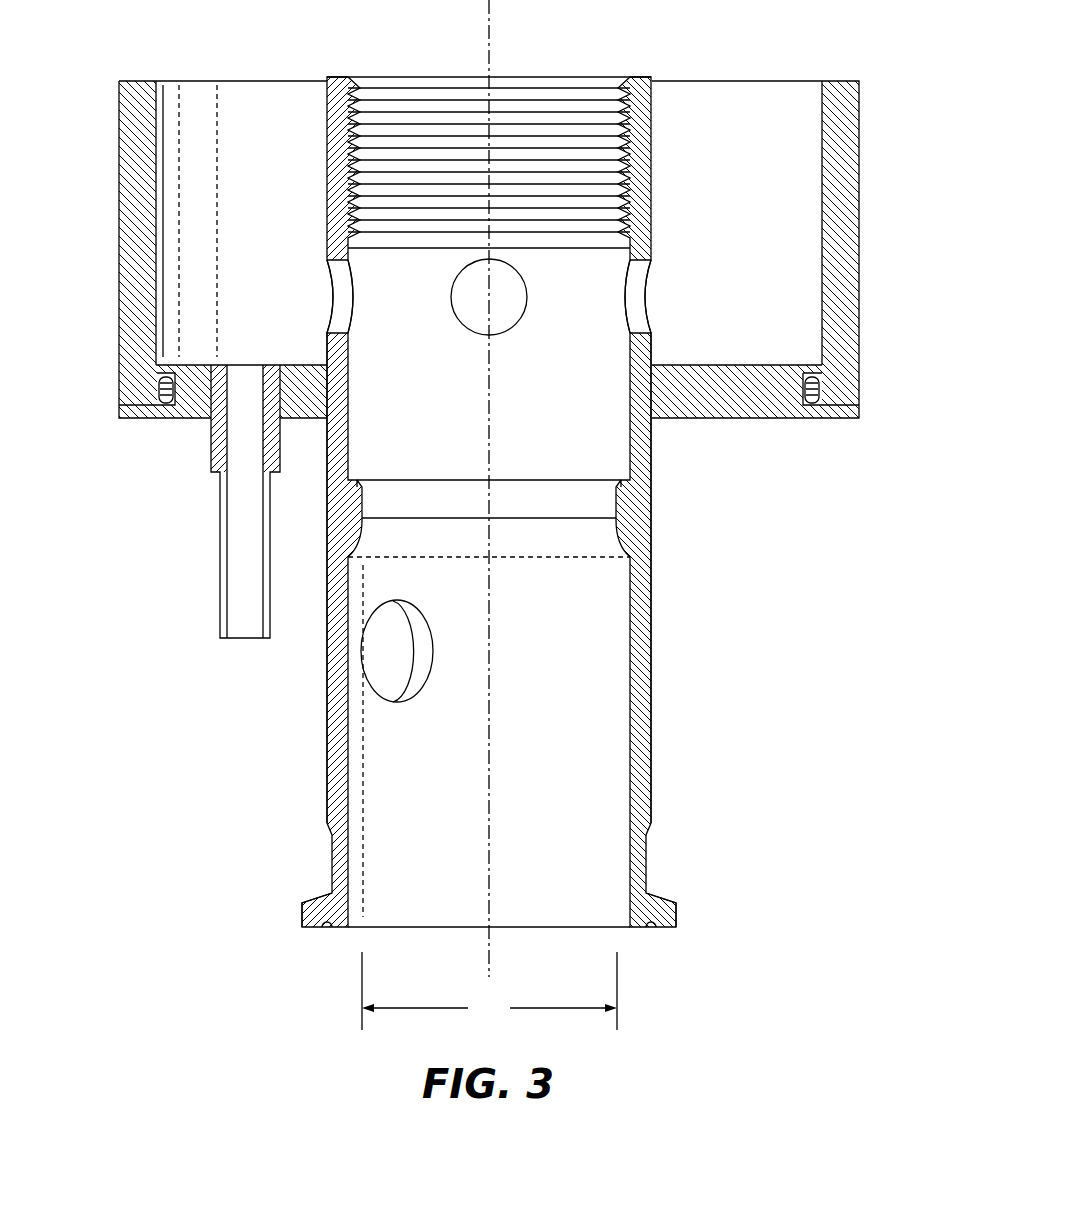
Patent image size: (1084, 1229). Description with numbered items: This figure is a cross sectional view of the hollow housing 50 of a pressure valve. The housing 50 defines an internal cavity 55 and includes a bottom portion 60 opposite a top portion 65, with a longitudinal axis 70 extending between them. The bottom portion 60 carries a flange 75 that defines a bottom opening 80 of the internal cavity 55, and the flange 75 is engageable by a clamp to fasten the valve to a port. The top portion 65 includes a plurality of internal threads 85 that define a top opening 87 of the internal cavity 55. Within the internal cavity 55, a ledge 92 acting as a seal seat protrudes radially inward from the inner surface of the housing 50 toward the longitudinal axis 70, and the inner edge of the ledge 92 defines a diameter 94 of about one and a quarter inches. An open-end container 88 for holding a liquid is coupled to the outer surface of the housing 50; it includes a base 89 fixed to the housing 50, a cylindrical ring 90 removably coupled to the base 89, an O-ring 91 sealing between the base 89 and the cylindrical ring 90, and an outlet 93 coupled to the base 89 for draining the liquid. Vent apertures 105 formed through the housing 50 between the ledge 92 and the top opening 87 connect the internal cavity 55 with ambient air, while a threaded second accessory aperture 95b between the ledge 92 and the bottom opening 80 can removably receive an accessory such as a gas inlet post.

The hollow housing 50 is at (494, 521).
The internal cavity 55 is at (601, 897).
The bottom portion 60 is at (263, 878).
The top portion 65 is at (288, 155).
The longitudinal axis 70 is at (486, 52).
The flange 75 is at (658, 897).
The bottom opening 80 is at (407, 915).
The internal threads 85 is at (372, 118).
The top opening 87 is at (528, 78).
The open-end container 88 is at (804, 253).
The base 89 is at (743, 402).
The cylindrical ring 90 is at (184, 327).
The O-ring 91 is at (165, 412).
The ledge 92 is at (628, 487).
The outlet 93 is at (242, 592).
The diameter 94 is at (489, 991).
The second accessory aperture 95b is at (367, 693).
The vent apertures 105 is at (525, 281).